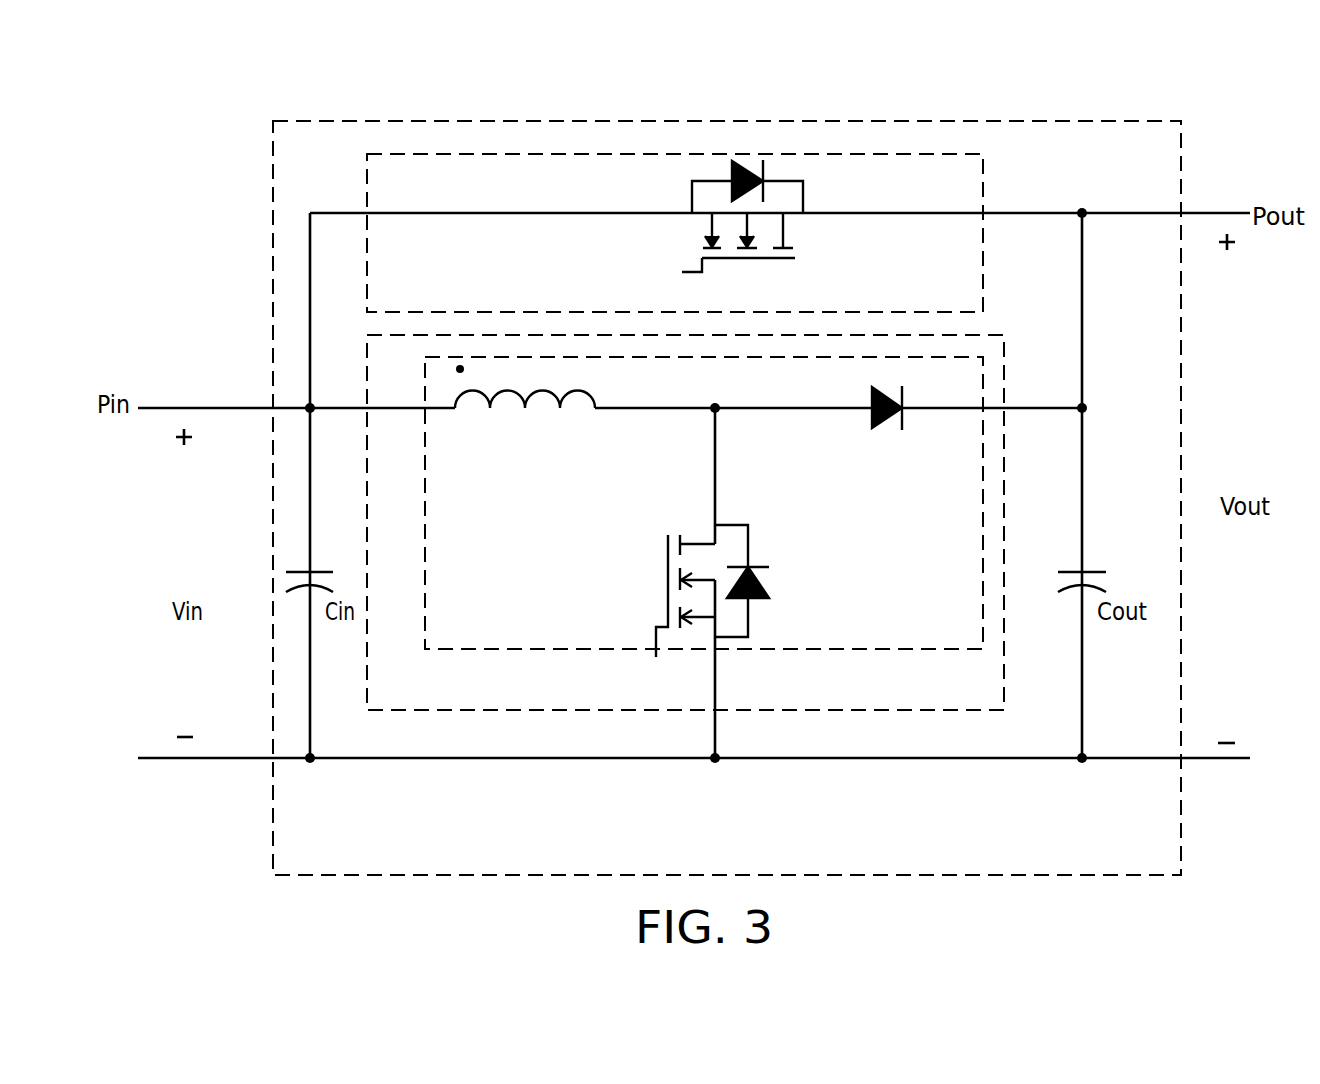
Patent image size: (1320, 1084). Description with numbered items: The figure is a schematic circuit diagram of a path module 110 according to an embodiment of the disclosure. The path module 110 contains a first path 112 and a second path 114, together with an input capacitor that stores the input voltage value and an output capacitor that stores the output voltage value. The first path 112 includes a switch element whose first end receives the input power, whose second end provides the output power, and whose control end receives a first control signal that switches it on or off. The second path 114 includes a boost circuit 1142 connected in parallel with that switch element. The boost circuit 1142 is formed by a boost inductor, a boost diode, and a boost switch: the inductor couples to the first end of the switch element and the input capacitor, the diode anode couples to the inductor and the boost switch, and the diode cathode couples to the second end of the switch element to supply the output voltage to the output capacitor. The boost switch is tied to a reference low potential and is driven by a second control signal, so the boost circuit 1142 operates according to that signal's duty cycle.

The path module 110 is at (1160, 121).
The first path 112 is at (983, 157).
The second path 114 is at (982, 711).
The boost circuit 1142 is at (877, 651).